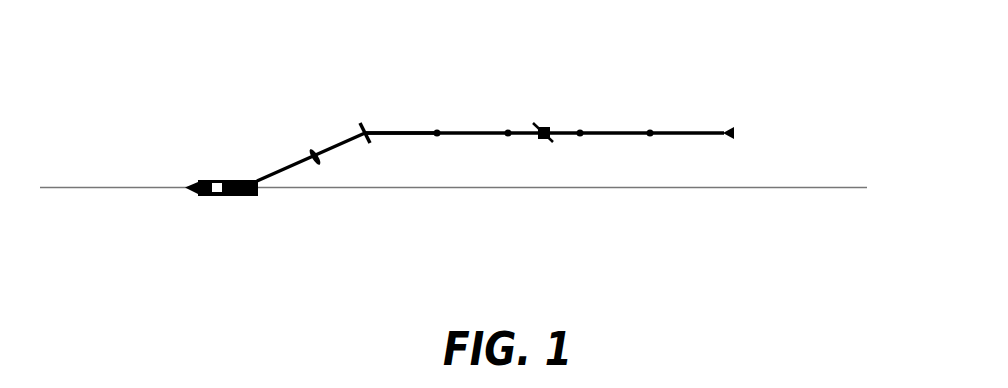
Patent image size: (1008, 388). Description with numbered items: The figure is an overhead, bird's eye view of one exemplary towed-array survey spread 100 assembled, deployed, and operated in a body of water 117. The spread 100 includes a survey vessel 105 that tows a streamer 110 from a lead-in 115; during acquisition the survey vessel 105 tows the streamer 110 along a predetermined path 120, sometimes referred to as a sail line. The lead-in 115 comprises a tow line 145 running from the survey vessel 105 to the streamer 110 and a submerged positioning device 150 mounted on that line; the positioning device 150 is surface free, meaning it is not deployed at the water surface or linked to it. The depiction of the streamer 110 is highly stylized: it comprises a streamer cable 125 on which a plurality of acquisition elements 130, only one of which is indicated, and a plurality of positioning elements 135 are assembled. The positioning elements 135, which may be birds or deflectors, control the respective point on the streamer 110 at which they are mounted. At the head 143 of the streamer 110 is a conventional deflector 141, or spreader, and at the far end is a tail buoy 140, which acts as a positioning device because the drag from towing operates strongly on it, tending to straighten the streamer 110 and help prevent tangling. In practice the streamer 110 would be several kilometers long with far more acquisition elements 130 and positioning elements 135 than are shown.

The towed-array survey spread 100 is at (143, 15).
The survey vessel 105 is at (203, 200).
The streamer 110 is at (754, 99).
The lead-in 115 is at (249, 89).
The body of water 117 is at (523, 266).
The predetermined path 120 is at (758, 188).
The streamer cable 125 is at (618, 129).
The acquisition elements 130 is at (437, 129).
The positioning elements 135 is at (543, 124).
The tail buoy 140 is at (737, 133).
The deflector 141 is at (360, 121).
The head 143 is at (373, 135).
The tow line 145 is at (338, 147).
The submerged positioning device 150 is at (310, 148).